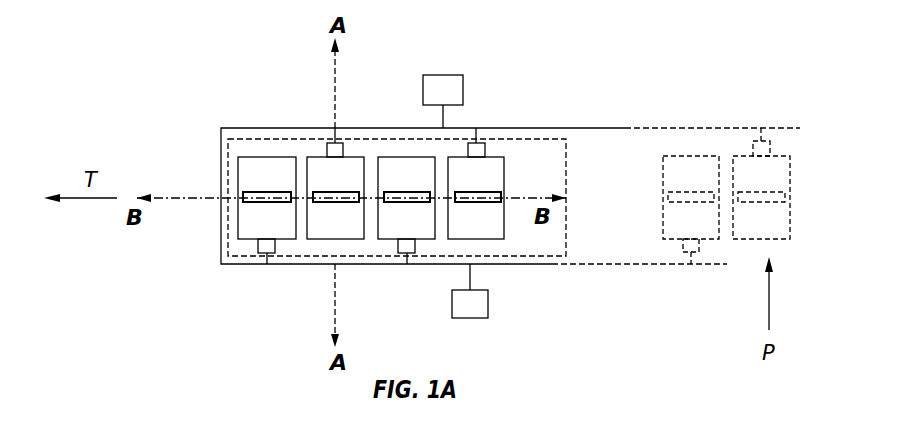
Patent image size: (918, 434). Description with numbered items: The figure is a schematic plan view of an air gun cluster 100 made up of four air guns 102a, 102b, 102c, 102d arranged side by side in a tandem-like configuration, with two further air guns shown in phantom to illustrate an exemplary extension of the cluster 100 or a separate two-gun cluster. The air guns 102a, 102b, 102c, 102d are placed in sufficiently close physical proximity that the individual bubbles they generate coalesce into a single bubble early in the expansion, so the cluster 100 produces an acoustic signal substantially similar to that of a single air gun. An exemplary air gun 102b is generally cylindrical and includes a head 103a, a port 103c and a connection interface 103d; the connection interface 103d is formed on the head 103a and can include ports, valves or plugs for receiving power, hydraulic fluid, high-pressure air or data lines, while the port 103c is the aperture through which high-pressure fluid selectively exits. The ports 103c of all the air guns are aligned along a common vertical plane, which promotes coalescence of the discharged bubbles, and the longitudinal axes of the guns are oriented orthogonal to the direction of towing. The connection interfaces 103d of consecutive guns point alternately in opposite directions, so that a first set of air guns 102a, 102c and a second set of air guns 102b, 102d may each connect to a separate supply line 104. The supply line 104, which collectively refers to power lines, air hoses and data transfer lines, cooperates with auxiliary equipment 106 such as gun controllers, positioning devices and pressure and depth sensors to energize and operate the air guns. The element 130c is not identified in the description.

The air gun cluster 100 is at (572, 224).
The air gun 102a is at (248, 162).
The air gun 102b is at (337, 238).
The air gun 102c is at (412, 162).
The air gun 102d is at (493, 162).
The head 103a is at (253, 230).
The port 103c is at (254, 203).
The connection interface 103d is at (332, 143).
The supply line 104 is at (220, 157).
The auxiliary equipment 106 is at (444, 76).
The nozzle array of second module 130c is at (315, 197).